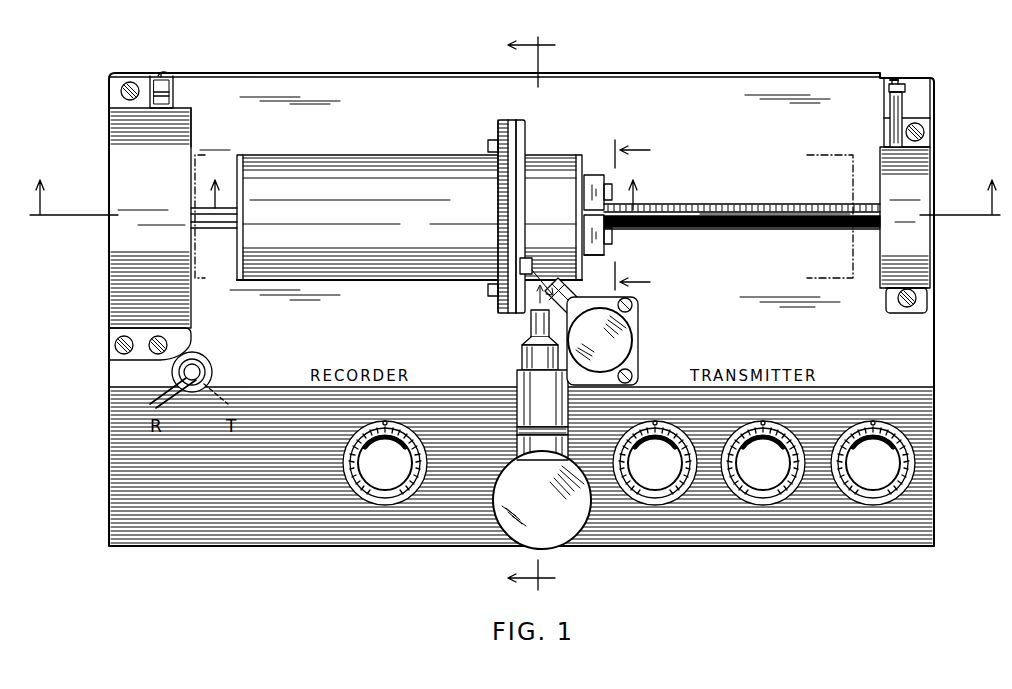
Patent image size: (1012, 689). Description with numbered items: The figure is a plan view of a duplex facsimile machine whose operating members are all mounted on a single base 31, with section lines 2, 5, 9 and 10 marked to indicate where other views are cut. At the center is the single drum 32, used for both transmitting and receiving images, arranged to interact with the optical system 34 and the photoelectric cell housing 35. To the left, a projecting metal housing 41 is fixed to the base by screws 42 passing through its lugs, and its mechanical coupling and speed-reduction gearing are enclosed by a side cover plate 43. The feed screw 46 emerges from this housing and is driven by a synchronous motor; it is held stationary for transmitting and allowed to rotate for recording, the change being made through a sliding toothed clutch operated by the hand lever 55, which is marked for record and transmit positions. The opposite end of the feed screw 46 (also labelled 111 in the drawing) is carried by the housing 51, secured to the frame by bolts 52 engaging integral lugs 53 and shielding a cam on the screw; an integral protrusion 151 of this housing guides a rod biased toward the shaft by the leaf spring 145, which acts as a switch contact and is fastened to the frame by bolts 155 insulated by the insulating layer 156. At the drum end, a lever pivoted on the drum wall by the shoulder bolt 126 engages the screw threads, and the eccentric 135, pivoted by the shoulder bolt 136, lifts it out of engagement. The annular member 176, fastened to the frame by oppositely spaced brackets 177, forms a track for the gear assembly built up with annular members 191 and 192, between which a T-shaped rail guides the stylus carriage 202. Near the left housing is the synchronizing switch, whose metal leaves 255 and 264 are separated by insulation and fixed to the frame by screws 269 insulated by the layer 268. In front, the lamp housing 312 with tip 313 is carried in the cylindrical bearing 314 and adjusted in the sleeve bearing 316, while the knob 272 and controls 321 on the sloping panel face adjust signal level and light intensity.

The base 31 is at (409, 296).
The drum 32 is at (409, 217).
The optical system 34 is at (512, 357).
The photoelectric cell housing 35 is at (633, 340).
The projecting metal housing 41 is at (150, 218).
The screws 42 is at (114, 345).
The side cover plate 43 is at (191, 128).
The feed screw 46 is at (705, 196).
The housing 51 is at (905, 180).
The bolts 52 is at (946, 298).
The lugs 53 is at (946, 286).
The hand lever 55 is at (176, 378).
The feed screw 111 is at (748, 208).
The shoulder bolt 126 is at (620, 195).
The eccentric 135 is at (590, 256).
The shoulder bolt 136 is at (612, 250).
The leaf spring 145 is at (905, 88).
The protrusion 151 is at (902, 110).
The bolts 155 is at (893, 80).
The insulating layer 156 is at (898, 83).
The annular member 176 is at (498, 126).
The brackets 177 is at (470, 300).
The annular member 191 is at (512, 120).
The annular member 192 is at (522, 120).
The stylus carriage 202 is at (526, 262).
The leaf of metal 255 is at (170, 96).
The leaf 264 is at (178, 86).
The insulating layer 268 is at (170, 78).
The screws 269 is at (163, 74).
The control knob 272 is at (385, 463).
The lamp housing 312 is at (542, 500).
The stylus tip 313 is at (531, 322).
The cylindrical bearing 314 is at (516, 374).
The sleeve bearing 316 is at (542, 448).
The controls 321 is at (764, 463).
The section line 2- 2 is at (515, 187).
The section line 5- 5 is at (522, 313).
The section line 9- 9 is at (428, 185).
The section line 10- 10 is at (644, 216).